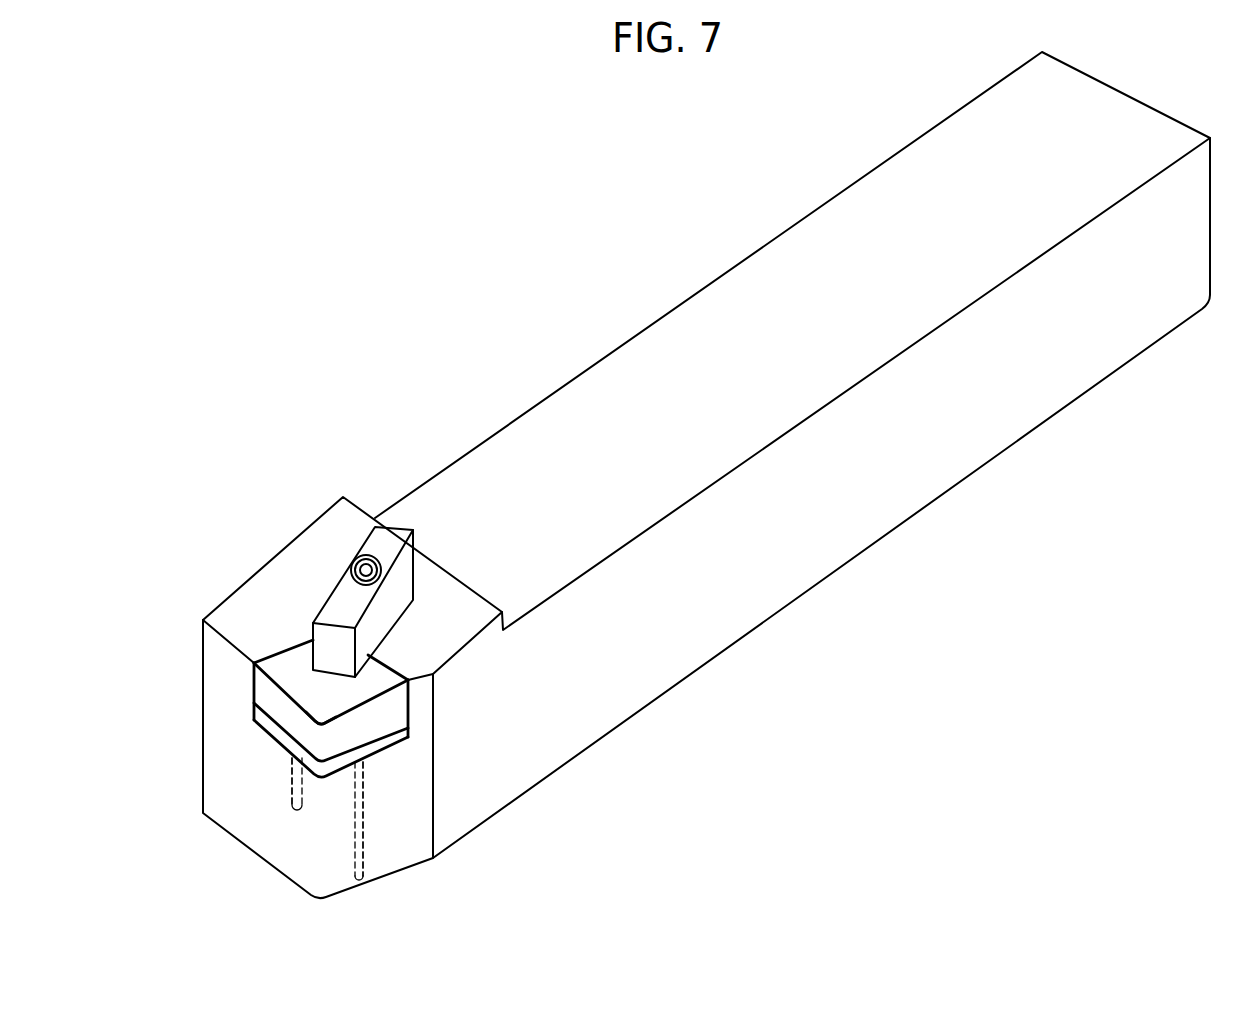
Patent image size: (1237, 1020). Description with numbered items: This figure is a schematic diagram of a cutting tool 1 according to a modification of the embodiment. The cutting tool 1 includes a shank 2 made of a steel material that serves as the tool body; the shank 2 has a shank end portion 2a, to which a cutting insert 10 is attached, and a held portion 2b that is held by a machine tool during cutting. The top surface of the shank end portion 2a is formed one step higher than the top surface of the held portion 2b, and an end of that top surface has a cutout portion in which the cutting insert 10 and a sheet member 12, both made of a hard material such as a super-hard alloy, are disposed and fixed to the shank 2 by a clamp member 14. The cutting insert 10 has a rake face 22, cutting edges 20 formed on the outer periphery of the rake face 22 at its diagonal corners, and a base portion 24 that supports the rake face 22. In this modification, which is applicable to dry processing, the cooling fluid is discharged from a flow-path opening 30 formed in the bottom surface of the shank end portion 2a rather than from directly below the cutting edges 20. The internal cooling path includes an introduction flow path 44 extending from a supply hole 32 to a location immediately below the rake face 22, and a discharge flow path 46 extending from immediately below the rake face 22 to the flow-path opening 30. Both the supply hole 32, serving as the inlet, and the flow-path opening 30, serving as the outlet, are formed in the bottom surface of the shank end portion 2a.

The cutting tool 1 is at (810, 842).
The shank 2 is at (656, 358).
The shank end portion 2a is at (266, 597).
The held portion 2b is at (847, 223).
The cutting insert 10 is at (270, 697).
The sheet member 12 is at (267, 729).
The clamp member 14 is at (342, 594).
The cutting edge 20 is at (327, 718).
The rake face 22 is at (270, 727).
The base portion 24 is at (375, 727).
The flow-path opening 30 is at (366, 890).
The supply hole 32 is at (282, 815).
The introduction flow path 44 is at (282, 786).
The discharge flow path 46 is at (373, 823).